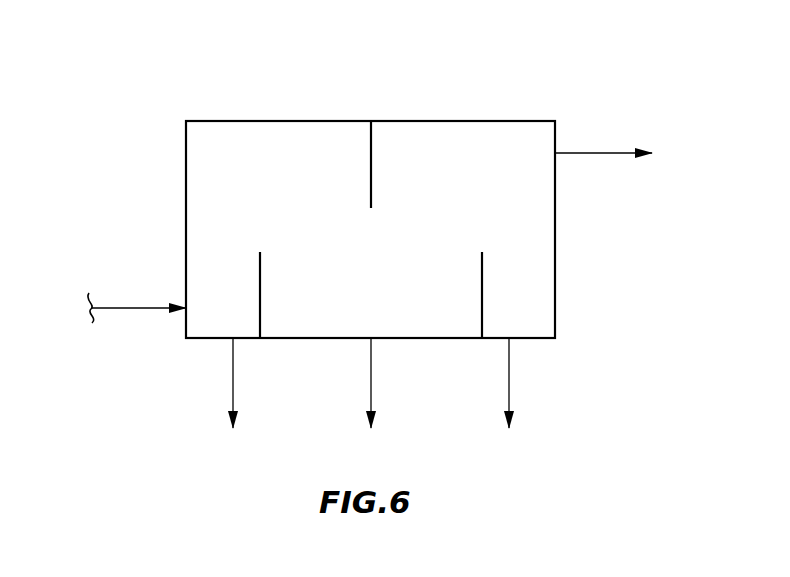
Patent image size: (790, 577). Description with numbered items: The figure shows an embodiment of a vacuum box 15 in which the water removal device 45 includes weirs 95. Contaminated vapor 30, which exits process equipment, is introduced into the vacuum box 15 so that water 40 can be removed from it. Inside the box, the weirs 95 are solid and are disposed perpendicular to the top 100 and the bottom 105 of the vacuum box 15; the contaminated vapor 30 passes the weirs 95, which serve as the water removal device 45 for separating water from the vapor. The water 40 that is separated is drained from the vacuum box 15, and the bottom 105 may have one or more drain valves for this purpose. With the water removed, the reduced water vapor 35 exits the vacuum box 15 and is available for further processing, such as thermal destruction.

The top 100 is at (212, 121).
The vacuum box 15 is at (403, 121).
The weirs 95 is at (373, 160).
The water removal device 45 is at (388, 196).
The reduced water vapor 35 is at (583, 153).
The contaminated vapor 30 is at (142, 305).
The water 40 is at (230, 397).
The bottom 105 is at (338, 340).